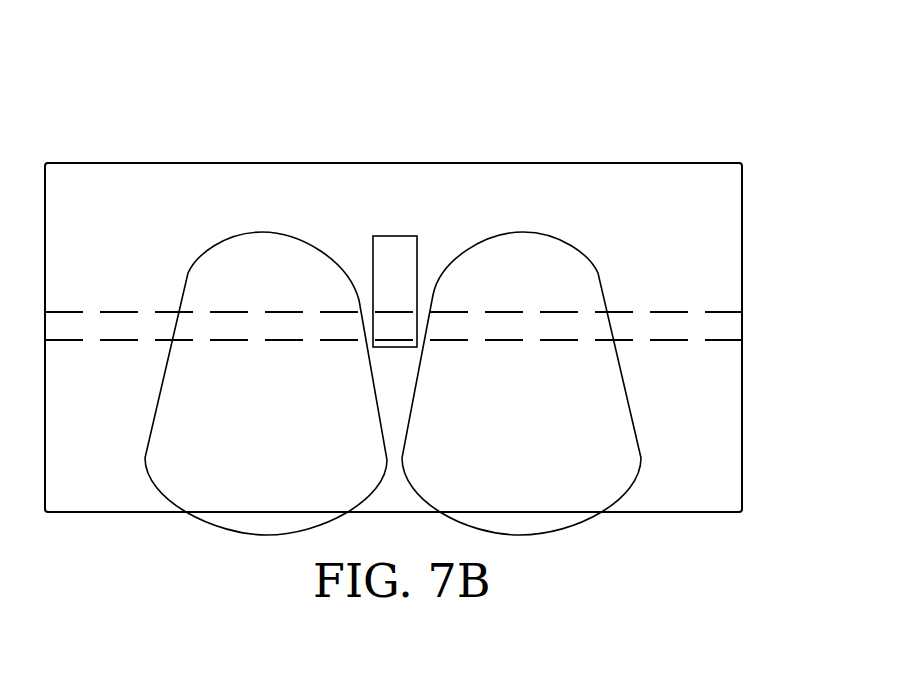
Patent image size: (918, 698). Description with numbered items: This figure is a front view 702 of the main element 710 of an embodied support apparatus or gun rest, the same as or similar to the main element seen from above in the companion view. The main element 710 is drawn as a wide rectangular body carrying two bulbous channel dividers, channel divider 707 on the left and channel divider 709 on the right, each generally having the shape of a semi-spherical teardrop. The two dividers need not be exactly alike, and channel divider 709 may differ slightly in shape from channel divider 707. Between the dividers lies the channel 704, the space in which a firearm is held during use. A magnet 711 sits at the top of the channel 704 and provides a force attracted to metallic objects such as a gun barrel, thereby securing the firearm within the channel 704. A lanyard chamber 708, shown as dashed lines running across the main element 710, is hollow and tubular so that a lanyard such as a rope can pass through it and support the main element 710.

The front view 702 is at (434, 86).
The main element 710 is at (470, 158).
The lanyard chamber 708 is at (745, 318).
The magnet 711 is at (422, 238).
The channel divider 707 is at (186, 521).
The channel divider 709 is at (592, 522).
The channel 704 is at (398, 401).